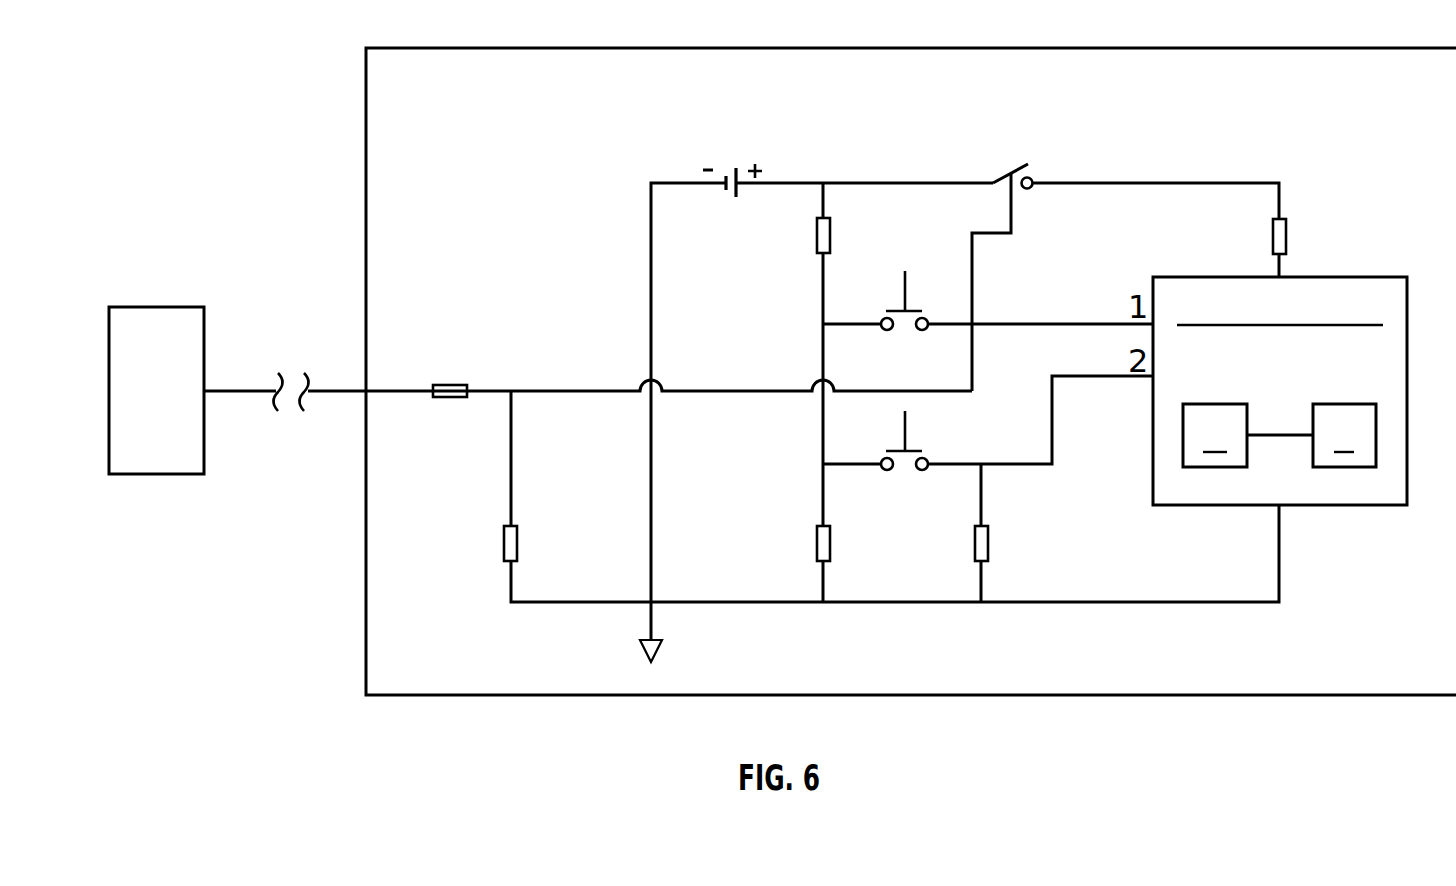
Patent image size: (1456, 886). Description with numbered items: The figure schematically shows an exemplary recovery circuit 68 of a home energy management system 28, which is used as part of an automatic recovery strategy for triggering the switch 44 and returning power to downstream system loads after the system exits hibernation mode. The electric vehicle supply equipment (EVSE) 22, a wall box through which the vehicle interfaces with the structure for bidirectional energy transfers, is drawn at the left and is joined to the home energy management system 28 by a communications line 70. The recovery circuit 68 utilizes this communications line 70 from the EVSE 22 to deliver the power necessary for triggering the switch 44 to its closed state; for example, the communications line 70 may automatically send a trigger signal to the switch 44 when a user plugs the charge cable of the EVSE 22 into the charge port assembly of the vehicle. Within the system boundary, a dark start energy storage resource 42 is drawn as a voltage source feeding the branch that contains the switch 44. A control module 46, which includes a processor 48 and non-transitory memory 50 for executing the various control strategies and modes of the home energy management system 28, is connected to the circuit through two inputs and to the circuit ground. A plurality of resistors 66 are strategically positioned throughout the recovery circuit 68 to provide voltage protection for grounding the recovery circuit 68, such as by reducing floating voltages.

The electric vehicle supply equipment (EVSE) 22 is at (165, 306).
The home energy management system 28 is at (421, 47).
The dark start energy storage resource 42 is at (728, 147).
The switch 44 is at (1027, 157).
The control module 46 is at (1210, 276).
The processor 48 is at (1345, 403).
The non-transitory memory 50 is at (1215, 403).
The resistor 66 is at (450, 385).
The recovery circuit 68 is at (1269, 157).
The communications line 70 is at (346, 392).